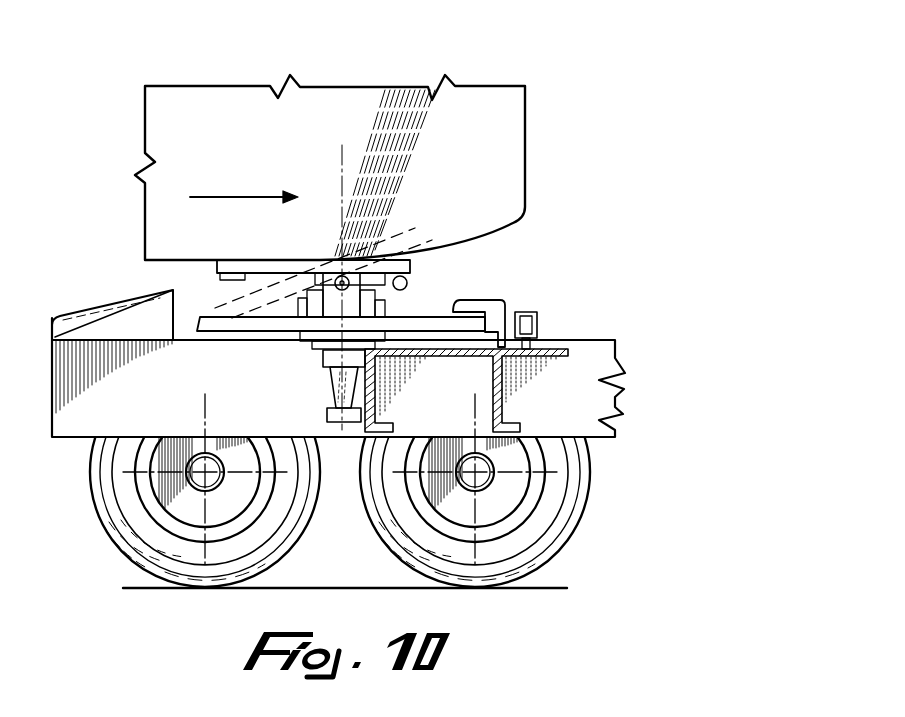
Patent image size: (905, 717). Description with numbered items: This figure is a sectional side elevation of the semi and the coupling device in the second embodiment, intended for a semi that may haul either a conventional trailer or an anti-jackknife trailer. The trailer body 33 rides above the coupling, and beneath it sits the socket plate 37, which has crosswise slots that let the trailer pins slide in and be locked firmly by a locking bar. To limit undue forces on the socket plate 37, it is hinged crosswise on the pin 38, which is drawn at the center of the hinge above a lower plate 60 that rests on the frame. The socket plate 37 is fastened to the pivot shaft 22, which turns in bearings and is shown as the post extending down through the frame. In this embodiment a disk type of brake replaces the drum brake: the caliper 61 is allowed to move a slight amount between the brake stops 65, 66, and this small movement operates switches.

The pivot shaft 22 is at (327, 382).
The container body 33 is at (490, 153).
The socket plate 37 is at (408, 270).
The pin 38 is at (330, 262).
The slide plate 60 is at (197, 322).
The caliper 61 is at (493, 300).
The brake stop 65 is at (533, 322).
The brake stop 66 is at (625, 308).